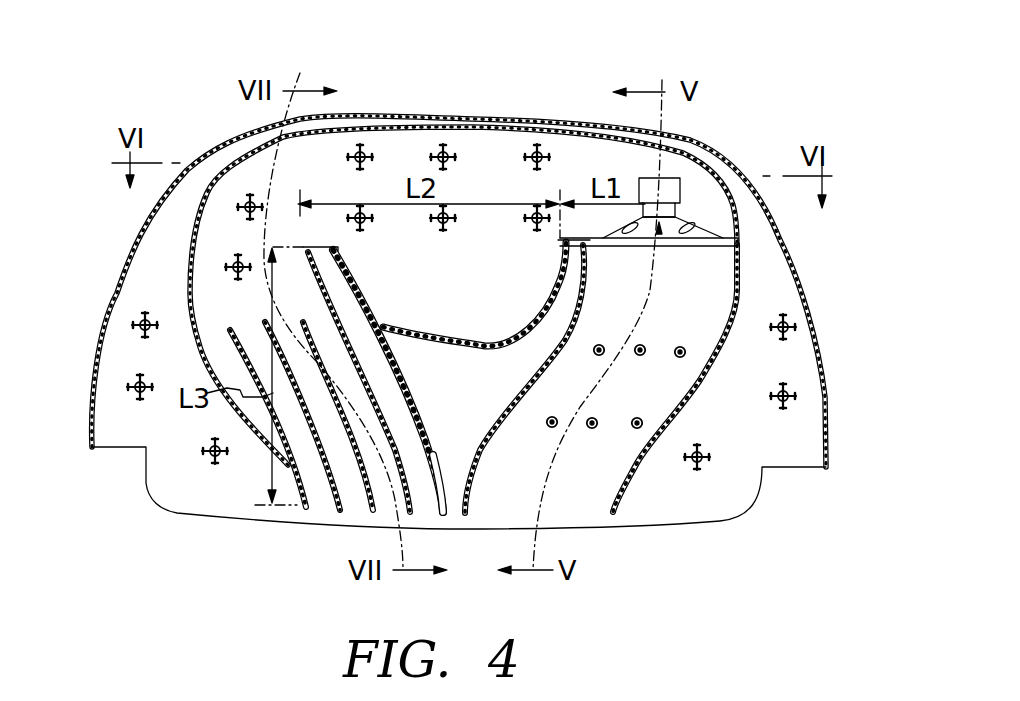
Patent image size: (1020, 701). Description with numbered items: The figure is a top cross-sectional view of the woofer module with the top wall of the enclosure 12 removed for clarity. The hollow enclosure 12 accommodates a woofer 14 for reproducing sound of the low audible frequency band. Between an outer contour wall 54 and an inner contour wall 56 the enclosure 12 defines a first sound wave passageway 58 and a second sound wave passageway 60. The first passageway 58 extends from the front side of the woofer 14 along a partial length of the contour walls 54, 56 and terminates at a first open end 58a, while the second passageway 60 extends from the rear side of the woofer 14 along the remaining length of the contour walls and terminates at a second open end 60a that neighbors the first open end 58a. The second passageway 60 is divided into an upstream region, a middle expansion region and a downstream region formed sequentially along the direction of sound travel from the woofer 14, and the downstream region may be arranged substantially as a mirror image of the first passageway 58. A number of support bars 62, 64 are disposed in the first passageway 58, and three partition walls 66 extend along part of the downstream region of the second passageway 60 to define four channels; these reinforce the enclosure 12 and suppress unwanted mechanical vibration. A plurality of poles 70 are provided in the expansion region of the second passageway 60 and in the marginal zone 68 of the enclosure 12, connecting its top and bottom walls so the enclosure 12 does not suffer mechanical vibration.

The enclosure 12 is at (556, 97).
The woofer 14 is at (675, 217).
The outer contour wall 54 is at (190, 240).
The inner contour wall 56 is at (527, 377).
The first sound wave passageway 58 is at (723, 283).
The first open end 58a is at (477, 500).
The second sound wave passageway 60 is at (200, 278).
The second open end 60a is at (453, 513).
The support bar 62 is at (643, 343).
The support bar 64 is at (633, 430).
The partition walls 66 is at (367, 500).
The marginal zone 68 is at (110, 437).
The poles 70 is at (443, 152).